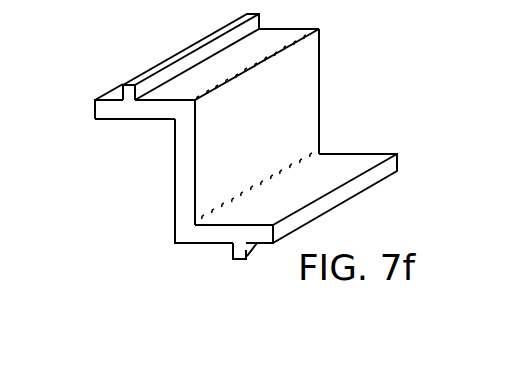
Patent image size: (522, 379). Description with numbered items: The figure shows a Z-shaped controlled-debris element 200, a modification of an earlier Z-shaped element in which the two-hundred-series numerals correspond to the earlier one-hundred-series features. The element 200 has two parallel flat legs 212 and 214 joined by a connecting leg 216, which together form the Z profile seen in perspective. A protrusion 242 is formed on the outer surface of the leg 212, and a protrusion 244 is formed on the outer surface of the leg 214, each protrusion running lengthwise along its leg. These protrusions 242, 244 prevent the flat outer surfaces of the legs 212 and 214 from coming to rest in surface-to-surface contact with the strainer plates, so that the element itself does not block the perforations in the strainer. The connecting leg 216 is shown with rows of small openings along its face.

The controlled-debris element 200 is at (222, 153).
The leg 212 is at (315, 182).
The leg 214 is at (181, 85).
The connecting leg 216 is at (177, 198).
The protrusion 242 is at (236, 258).
The protrusion 244 is at (124, 88).